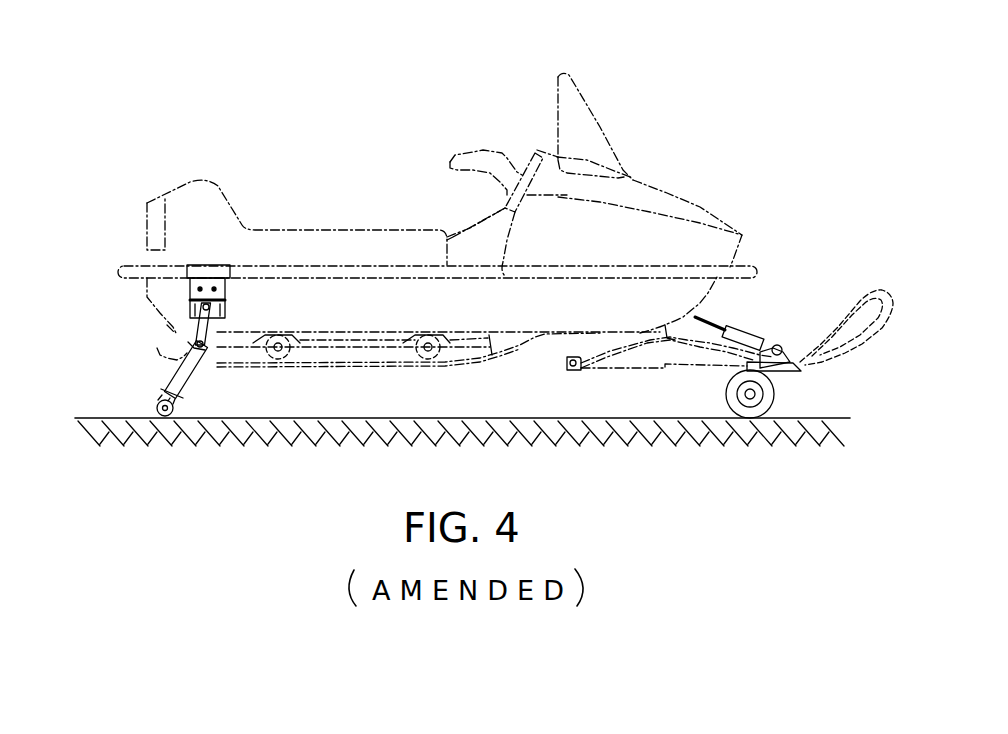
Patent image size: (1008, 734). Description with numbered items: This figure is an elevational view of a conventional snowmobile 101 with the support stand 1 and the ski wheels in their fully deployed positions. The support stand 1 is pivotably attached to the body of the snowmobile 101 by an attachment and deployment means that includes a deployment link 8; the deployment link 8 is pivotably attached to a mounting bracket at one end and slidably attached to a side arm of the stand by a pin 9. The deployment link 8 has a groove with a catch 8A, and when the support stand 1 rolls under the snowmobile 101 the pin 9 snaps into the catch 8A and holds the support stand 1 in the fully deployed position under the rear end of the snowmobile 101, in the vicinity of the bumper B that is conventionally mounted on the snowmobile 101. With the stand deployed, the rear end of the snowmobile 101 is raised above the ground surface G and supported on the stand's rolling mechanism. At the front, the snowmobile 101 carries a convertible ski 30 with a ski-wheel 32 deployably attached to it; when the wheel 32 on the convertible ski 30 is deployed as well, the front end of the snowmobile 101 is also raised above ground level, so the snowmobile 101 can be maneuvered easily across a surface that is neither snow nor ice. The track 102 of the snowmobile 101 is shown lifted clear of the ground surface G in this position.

The support stand 1 is at (136, 325).
The deployment link 8 is at (173, 343).
The catch 8A is at (207, 358).
The pin 9 is at (197, 347).
The convertible ski 30 is at (667, 360).
The ski-wheel 32 is at (750, 398).
The snowmobile 101 is at (342, 237).
The snowmobile track 102 is at (350, 350).
The bumper B is at (128, 267).
The ground surface G is at (165, 440).